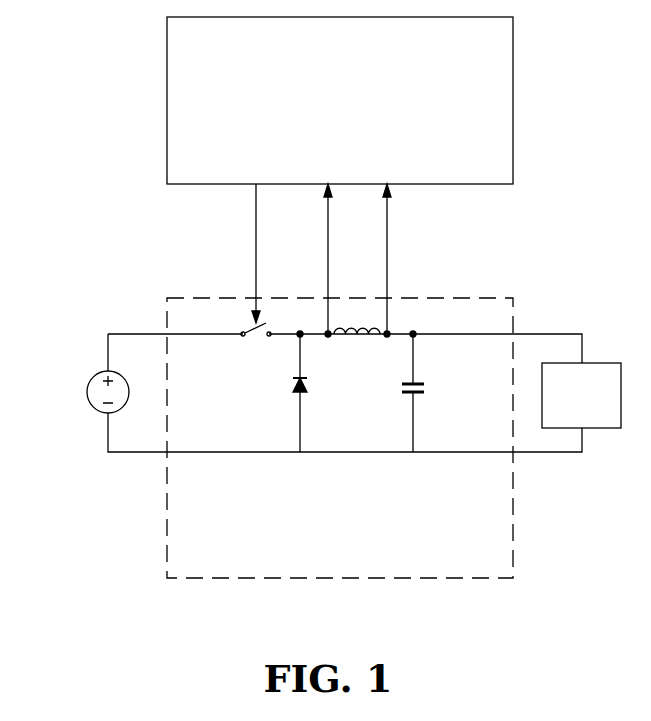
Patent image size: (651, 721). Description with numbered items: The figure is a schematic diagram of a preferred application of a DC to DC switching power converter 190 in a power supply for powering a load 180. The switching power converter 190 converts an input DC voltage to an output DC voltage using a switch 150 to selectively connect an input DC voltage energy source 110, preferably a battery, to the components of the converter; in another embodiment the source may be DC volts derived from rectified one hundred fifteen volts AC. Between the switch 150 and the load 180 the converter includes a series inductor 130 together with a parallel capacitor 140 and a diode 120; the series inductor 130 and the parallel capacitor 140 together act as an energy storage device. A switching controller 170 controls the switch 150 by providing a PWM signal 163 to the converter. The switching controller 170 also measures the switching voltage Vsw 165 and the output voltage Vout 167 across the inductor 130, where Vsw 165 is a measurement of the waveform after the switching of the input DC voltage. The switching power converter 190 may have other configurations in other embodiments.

The DC voltage energy source 110 is at (84, 394).
The diode 120 is at (279, 391).
The series inductor 130 is at (357, 343).
The parallel capacitor 140 is at (429, 391).
The switch 150 is at (256, 340).
The PWM signal 163 is at (220, 253).
The Vsw 165 is at (308, 260).
The Vout 167 is at (365, 260).
The switching controller 170 is at (340, 100).
The load 180 is at (581, 395).
The switching power converter 190 is at (340, 438).